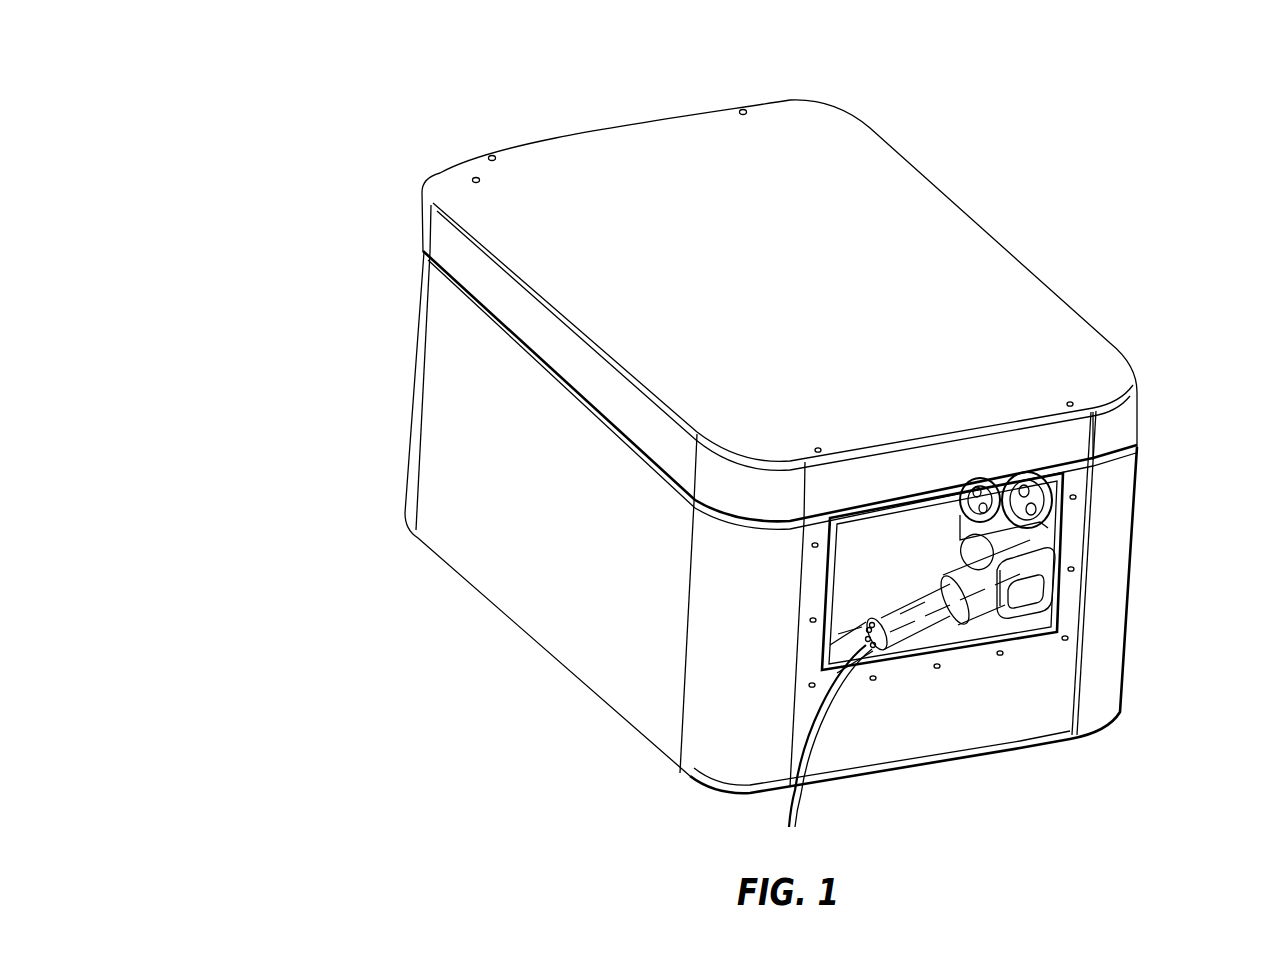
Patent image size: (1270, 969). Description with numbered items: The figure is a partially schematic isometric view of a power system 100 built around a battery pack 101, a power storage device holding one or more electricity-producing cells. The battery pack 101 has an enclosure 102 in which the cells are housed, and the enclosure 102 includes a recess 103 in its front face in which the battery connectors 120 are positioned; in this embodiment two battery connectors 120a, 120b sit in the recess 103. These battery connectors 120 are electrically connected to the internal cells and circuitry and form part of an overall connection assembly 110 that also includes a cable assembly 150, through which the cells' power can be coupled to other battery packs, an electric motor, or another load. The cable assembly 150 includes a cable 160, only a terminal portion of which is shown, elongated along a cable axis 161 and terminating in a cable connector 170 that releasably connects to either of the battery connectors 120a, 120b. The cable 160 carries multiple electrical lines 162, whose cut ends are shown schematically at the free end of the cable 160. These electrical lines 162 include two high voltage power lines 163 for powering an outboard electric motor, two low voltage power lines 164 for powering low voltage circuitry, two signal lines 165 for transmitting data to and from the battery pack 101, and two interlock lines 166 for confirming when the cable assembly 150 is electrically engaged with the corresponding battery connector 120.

The power system 100 is at (310, 115).
The battery pack 101 is at (346, 409).
The enclosure 102 is at (568, 648).
The recess 103 is at (914, 516).
The connection assembly 110 is at (1097, 654).
The battery connector 120 is at (1097, 590).
The battery connector 120a is at (1092, 535).
The battery connector 120b is at (1092, 613).
The cable assembly 150 is at (939, 630).
The cable 160 is at (896, 650).
The cable axis 161 is at (906, 610).
The electrical lines 162 is at (873, 628).
The high voltage power lines 163 is at (870, 628).
The low voltage power lines 164 is at (871, 634).
The signal lines 165 is at (790, 812).
The interlock lines 166 is at (840, 630).
The cable connector 170 is at (973, 612).